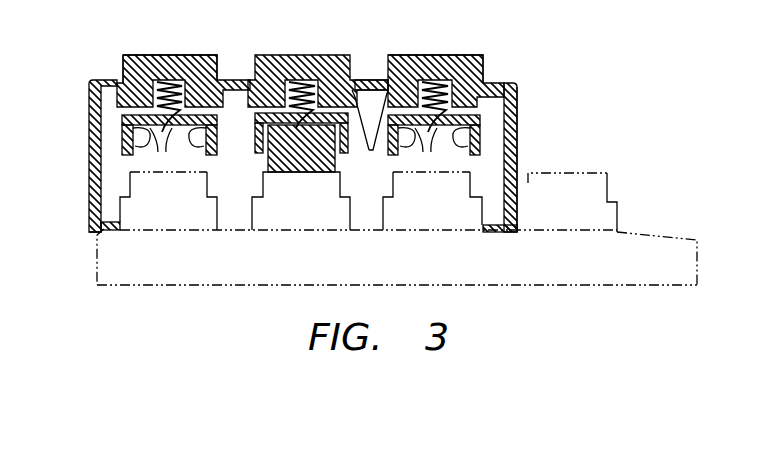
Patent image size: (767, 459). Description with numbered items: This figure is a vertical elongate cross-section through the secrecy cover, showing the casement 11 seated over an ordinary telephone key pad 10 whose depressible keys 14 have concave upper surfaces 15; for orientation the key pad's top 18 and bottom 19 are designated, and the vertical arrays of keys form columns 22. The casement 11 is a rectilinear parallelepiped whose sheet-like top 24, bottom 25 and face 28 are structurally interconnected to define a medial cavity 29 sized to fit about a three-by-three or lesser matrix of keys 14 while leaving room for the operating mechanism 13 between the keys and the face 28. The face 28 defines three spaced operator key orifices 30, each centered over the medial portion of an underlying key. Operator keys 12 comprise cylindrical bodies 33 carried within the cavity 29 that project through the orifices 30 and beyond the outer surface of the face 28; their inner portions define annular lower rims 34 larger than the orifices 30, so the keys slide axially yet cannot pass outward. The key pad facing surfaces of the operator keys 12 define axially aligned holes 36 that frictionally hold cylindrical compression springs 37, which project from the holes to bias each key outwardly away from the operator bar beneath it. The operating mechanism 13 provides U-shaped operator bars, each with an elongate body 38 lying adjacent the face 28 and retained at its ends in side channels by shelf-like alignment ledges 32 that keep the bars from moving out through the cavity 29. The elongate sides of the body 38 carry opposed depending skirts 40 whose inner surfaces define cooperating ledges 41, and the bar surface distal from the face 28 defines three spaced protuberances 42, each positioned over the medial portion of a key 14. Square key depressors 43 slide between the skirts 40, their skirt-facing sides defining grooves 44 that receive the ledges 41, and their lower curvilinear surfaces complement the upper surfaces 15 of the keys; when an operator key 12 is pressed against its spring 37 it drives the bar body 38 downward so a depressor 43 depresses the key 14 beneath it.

The key pad 10 is at (169, 283).
The casement 11 is at (520, 191).
The operator keys 12 is at (249, 53).
The operating mechanism 13 is at (300, 150).
The keys 14 is at (585, 192).
The upper surfaces 15 is at (588, 173).
The top 18 is at (97, 250).
The bottom 19 is at (697, 262).
The columns 22 is at (203, 212).
The top 24 is at (117, 96).
The bottom 25 is at (518, 166).
The face 28 is at (376, 95).
The medial cavity 29 is at (149, 136).
The operator key orifices 30 is at (356, 96).
The alignment ledges 32 is at (110, 229).
The cylindrical bodies 33 is at (153, 62).
The lower rims 34 is at (368, 148).
The holes 36 is at (130, 92).
The compression springs 37 is at (170, 94).
The elongate body 38 is at (126, 116).
The skirts 40 is at (134, 131).
The ledges 41 is at (187, 144).
The protuberances 42 is at (177, 138).
The key depressors 43 is at (281, 173).
The grooves 44 is at (312, 165).